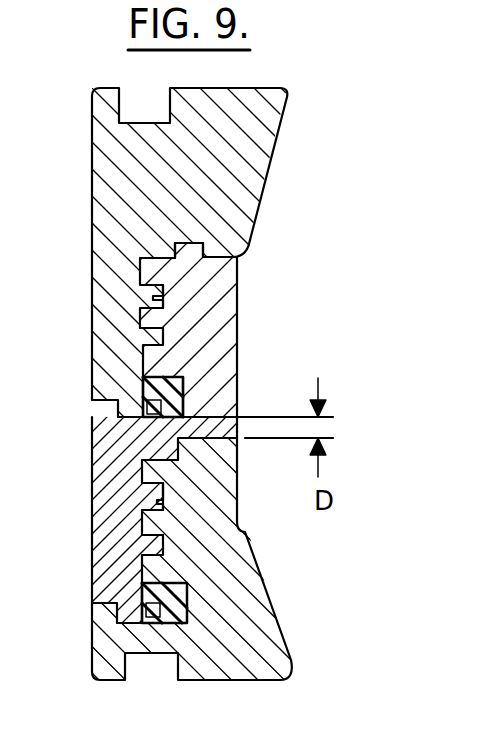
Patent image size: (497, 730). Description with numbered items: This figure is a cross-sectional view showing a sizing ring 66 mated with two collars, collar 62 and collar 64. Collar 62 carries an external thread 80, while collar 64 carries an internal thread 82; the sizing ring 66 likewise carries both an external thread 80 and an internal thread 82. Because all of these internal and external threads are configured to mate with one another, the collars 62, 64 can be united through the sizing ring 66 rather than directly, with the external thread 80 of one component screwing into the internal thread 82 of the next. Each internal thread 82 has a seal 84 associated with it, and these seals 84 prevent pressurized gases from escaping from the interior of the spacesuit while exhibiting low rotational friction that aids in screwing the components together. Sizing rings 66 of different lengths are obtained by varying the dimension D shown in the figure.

The collar 62 is at (257, 137).
The collar 64 is at (262, 642).
The sizing ring 66 is at (220, 284).
The external thread 80 is at (153, 298).
The internal thread 82 is at (147, 329).
The seal 84 is at (183, 387).